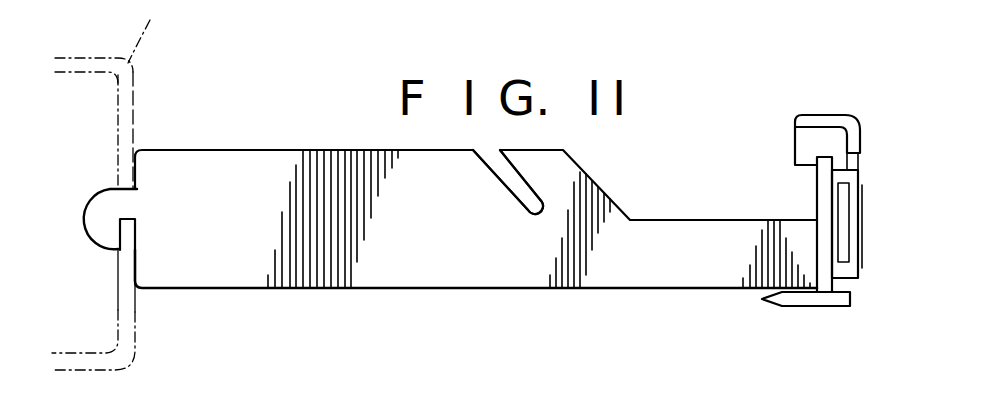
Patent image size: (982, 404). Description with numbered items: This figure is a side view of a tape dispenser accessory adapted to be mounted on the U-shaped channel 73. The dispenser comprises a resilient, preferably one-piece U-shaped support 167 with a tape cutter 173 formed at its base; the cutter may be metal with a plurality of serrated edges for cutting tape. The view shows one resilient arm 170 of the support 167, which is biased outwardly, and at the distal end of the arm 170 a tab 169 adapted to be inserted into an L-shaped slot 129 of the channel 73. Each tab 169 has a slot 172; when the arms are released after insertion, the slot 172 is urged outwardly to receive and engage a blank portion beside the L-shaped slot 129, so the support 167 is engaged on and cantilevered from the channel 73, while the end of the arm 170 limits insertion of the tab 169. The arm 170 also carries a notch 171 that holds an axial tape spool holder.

The U-shaped channel 73 is at (152, 30).
The L-shaped slot 129 is at (128, 185).
The resilient U-shaped support 167 is at (285, 148).
The tab 169 is at (100, 206).
The support arm 170 is at (480, 272).
The notch 171 is at (516, 192).
The slot 172 is at (136, 246).
The tape cutter 173 is at (857, 120).